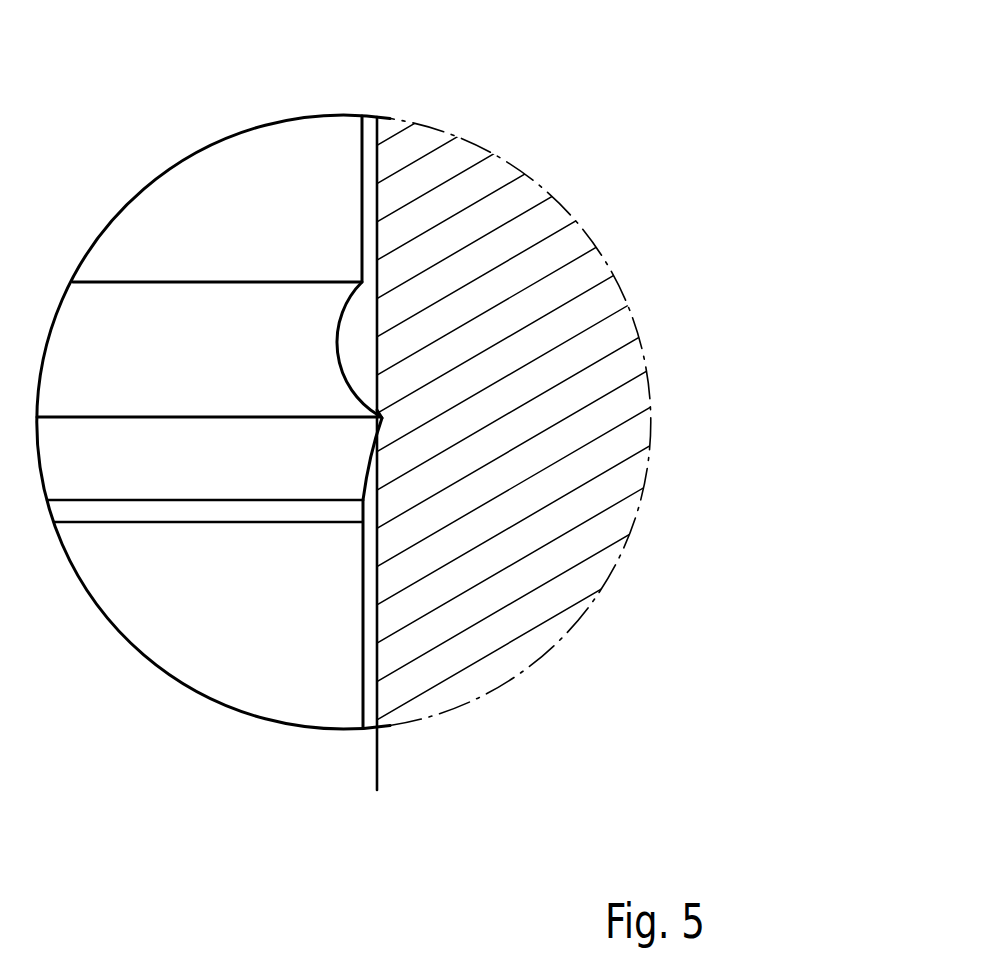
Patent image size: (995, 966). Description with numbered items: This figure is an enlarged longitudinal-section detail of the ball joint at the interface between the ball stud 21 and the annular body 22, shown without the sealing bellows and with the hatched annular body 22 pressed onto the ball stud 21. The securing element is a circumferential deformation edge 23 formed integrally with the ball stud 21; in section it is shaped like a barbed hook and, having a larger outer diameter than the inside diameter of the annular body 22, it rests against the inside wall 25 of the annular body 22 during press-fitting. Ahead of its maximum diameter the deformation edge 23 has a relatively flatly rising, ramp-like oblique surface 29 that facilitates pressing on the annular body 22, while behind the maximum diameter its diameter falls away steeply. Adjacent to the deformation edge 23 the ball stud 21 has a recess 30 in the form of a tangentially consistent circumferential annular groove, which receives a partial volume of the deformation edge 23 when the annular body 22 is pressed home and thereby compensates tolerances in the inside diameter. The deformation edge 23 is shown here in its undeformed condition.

The ball stud 21 is at (306, 135).
The annular body 22 is at (465, 157).
The deformation edge 23 is at (382, 424).
The inside wall 25 is at (366, 761).
The oblique surface 29 is at (385, 440).
The recess 30 is at (386, 316).